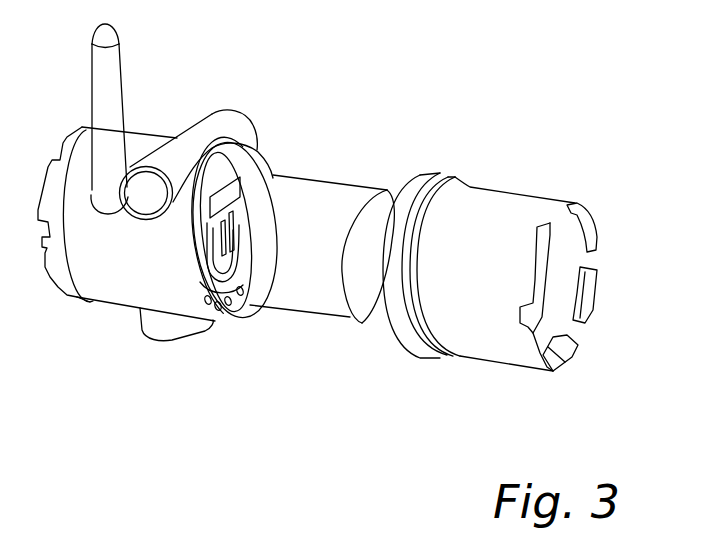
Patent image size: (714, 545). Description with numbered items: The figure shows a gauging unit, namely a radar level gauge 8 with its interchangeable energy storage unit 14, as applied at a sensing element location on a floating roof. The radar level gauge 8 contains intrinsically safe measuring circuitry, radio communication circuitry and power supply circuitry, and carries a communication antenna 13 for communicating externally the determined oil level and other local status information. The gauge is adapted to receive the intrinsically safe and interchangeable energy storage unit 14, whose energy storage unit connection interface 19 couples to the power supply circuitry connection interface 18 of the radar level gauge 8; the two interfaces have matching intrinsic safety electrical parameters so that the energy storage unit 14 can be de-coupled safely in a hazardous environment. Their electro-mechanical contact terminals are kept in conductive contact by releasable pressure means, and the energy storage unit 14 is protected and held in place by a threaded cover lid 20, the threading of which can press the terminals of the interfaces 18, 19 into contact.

The radar level gauge 8 is at (118, 282).
The communication antenna 13 is at (114, 87).
The energy storage unit 14 is at (341, 195).
The power supply circuitry connection interface 18 is at (240, 252).
The energy storage unit connection interface 19 is at (263, 204).
The threaded cover lid 20 is at (515, 215).